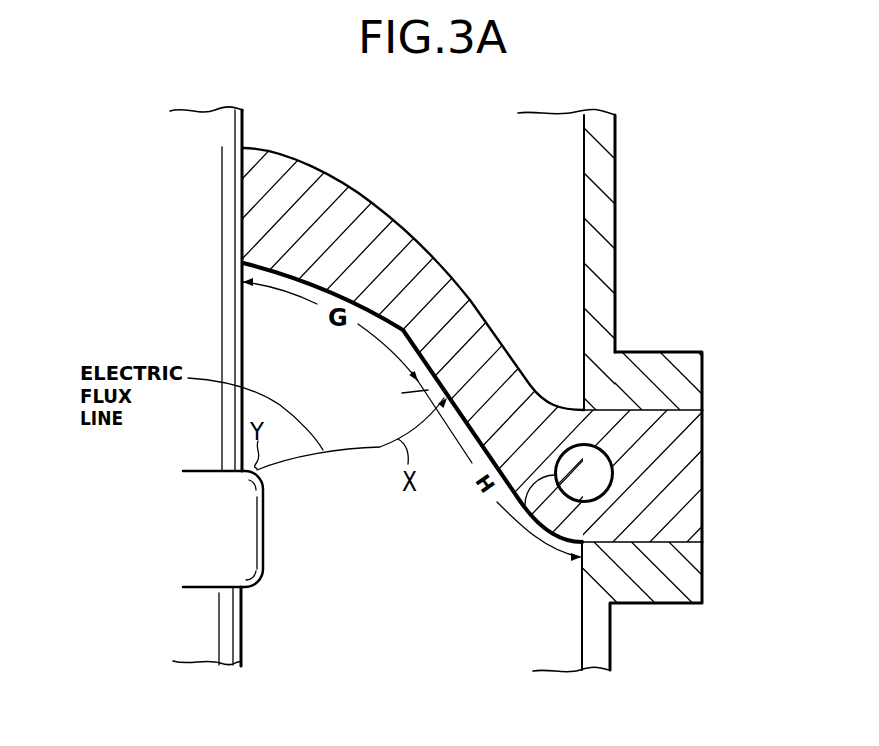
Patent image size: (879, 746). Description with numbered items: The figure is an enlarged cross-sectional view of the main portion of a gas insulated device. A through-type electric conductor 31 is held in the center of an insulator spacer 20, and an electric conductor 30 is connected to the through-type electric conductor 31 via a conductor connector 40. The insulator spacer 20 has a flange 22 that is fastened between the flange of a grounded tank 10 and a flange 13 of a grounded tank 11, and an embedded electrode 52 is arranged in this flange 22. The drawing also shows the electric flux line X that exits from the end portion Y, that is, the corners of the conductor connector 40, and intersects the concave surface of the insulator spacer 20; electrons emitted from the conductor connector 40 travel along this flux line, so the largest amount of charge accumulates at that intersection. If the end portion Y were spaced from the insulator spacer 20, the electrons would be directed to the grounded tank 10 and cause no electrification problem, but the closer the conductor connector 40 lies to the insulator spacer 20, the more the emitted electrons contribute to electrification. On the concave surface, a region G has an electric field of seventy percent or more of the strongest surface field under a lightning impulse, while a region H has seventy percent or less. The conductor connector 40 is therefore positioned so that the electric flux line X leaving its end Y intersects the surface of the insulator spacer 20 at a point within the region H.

The grounded tank 10 is at (585, 652).
The grounded tank 11 is at (615, 216).
The flange 13 is at (688, 381).
The insulator spacer 20 is at (432, 248).
The flange 22 is at (686, 490).
The electric conductor 30 is at (241, 628).
The through-type electric conductor 31 is at (243, 354).
The conductor connector 40 is at (263, 536).
The embedded electrode 52 is at (521, 517).